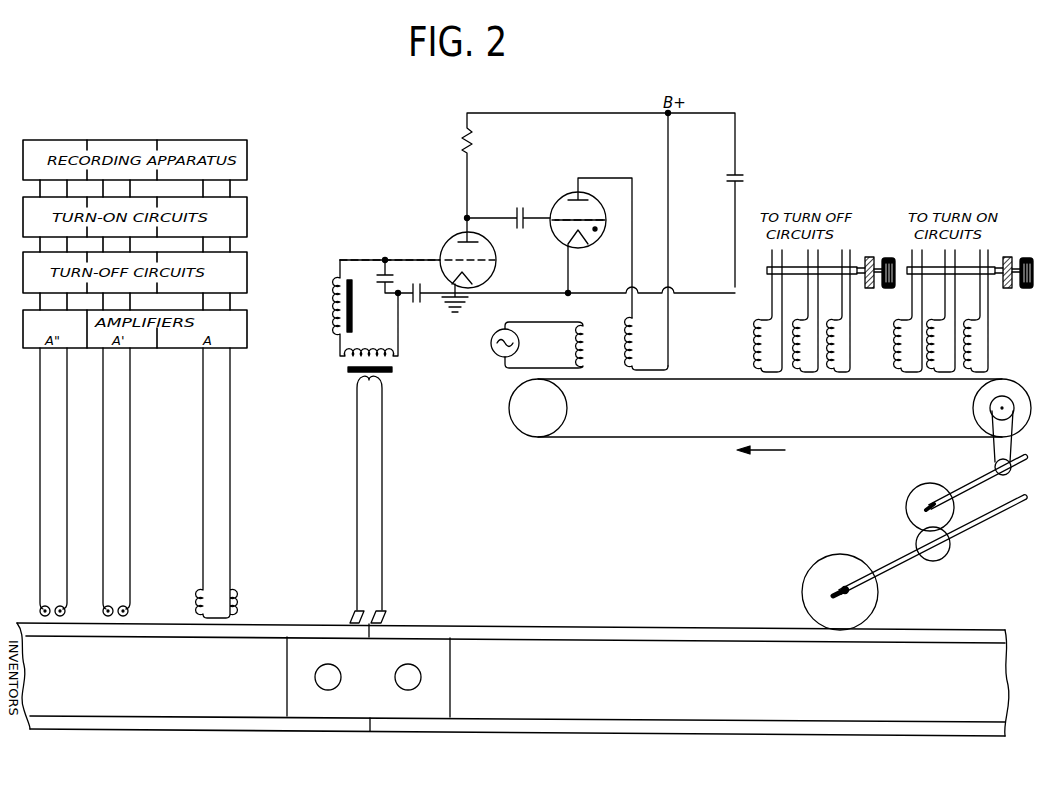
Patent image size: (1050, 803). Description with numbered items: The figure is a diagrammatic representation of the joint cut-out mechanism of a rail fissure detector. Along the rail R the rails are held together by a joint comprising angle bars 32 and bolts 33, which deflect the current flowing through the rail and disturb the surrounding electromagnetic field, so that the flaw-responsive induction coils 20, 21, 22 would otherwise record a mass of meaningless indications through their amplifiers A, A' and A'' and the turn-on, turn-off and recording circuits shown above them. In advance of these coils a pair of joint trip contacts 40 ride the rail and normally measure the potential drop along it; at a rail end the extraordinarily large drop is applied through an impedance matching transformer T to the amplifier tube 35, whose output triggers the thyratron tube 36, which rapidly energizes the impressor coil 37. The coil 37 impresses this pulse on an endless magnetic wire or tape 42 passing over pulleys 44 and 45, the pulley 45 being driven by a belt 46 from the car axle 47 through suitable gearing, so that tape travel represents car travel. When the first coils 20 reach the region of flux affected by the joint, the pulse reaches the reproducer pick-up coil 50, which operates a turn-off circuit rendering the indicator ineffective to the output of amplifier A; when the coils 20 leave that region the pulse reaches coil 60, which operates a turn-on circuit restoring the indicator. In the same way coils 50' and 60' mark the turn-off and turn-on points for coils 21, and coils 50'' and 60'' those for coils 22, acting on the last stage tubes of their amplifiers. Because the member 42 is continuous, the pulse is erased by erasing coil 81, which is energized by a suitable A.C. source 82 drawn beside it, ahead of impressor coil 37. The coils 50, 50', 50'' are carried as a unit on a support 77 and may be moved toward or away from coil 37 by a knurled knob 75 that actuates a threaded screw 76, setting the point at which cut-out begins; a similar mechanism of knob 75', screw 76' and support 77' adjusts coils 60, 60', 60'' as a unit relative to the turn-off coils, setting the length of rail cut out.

The first pair of induction coils 20 is at (232, 601).
The second pair of induction coils 21 is at (124, 606).
The third pair of induction coils 22 is at (61, 606).
The angle bar 32 is at (382, 695).
The bolt 33 is at (327, 690).
The amplifier tube 35 is at (492, 273).
The thyratron tube 36 is at (557, 206).
The impressor coil 37 is at (628, 362).
The joint trip contacts 40 is at (381, 612).
The endless magnetic tape 42 is at (681, 439).
The pulley 44 is at (535, 425).
The pulley 45 is at (1006, 392).
The belt 46 is at (1012, 443).
The car axle 47 is at (906, 560).
The reproducer pick-up coil 50 is at (743, 311).
The reproducer pick-up coil 50' is at (784, 332).
The reproducer pick-up coil 50'' is at (825, 332).
The turn-on pick-up coil 60 is at (894, 333).
The turn-on pick-up coil 60' is at (929, 332).
The turn-on pick-up coil 60'' is at (965, 332).
The knurled knob 75 is at (883, 261).
The knurled knob 75' is at (1024, 293).
The threaded screw 76 is at (876, 293).
The threaded screw 76' is at (1023, 257).
The support 77 is at (804, 260).
The support 77' is at (955, 259).
The erasing coil 81 is at (586, 333).
The oscillator 82 is at (491, 341).
The rail R is at (590, 656).
The impedance matching transformer T is at (375, 321).